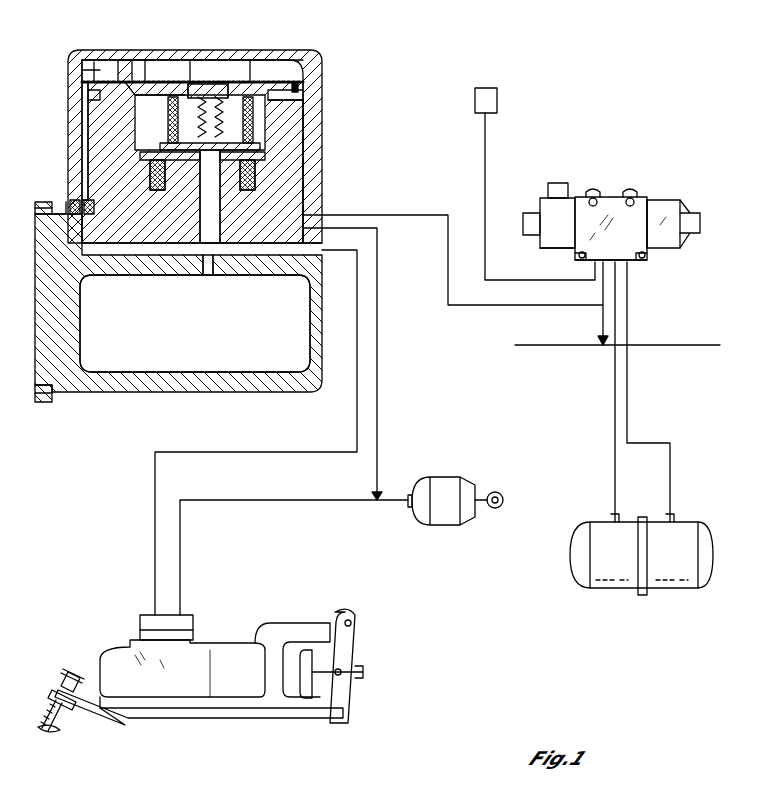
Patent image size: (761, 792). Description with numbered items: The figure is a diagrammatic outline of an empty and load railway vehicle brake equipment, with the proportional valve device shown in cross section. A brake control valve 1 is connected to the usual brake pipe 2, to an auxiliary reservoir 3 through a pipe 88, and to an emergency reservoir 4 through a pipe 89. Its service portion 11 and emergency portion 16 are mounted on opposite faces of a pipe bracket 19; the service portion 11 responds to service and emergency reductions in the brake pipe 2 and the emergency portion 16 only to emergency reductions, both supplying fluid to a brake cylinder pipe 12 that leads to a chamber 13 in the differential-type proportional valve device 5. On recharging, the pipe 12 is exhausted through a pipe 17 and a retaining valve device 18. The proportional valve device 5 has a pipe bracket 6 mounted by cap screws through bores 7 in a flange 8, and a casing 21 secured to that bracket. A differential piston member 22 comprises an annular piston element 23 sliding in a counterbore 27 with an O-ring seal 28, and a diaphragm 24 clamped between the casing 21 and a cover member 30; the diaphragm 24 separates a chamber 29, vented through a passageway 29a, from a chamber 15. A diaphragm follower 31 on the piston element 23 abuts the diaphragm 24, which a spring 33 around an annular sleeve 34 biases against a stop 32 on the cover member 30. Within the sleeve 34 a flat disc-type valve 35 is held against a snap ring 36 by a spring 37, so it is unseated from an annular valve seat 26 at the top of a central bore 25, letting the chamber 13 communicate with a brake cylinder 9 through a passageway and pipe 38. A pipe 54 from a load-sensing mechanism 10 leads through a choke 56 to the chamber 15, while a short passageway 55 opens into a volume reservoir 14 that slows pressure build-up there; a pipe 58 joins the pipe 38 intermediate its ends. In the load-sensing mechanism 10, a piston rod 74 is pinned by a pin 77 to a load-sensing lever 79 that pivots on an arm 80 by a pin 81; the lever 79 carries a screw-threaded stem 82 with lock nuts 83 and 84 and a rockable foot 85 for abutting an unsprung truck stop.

The brake control valve 1 is at (615, 190).
The brake pipe 2 is at (594, 333).
The auxiliary reservoir 3 is at (706, 525).
The emergency reservoir 4 is at (575, 526).
The differential-type proportional valve device 5 is at (331, 133).
The pipe bracket 6 is at (30, 265).
The bores 7 is at (35, 210).
The flange 8 is at (48, 202).
The brake cylinder 9 is at (442, 473).
The load-sensing mechanism 10 is at (135, 640).
The service portion 11 is at (540, 254).
The brake cylinder pipe 12 is at (322, 202).
The chamber 13 is at (222, 170).
The volume reservoir 14 is at (203, 336).
The chamber 15 is at (252, 80).
The emergency portion 16 is at (668, 248).
The pipe 17 is at (485, 151).
The retaining valve device 18 is at (492, 100).
The pipe bracket 19 is at (582, 267).
The casing 21 is at (314, 186).
The differential piston member 22 is at (300, 96).
The annular piston element 23 is at (256, 120).
The diaphragm 24 is at (279, 84).
The central bore 25 is at (256, 183).
The annular valve seat 26 is at (256, 156).
The counterbore 27 is at (156, 160).
The O-ring seal 28 is at (160, 147).
The chamber 29 is at (86, 96).
The passageway 29a is at (306, 104).
The cover member 30 is at (140, 58).
The diaphragm follower 31 is at (148, 80).
The stop 32 is at (215, 62).
The spring 33 is at (166, 182).
The annular sleeve 34 is at (166, 112).
The flat disc-type valve 35 is at (166, 128).
The snap ring 36 is at (232, 138).
The spring 37 is at (190, 86).
The passageway 38 is at (355, 232).
The pipe 54 is at (80, 72).
The short passageway 55 is at (210, 275).
The choke 56 is at (70, 212).
The pipe 58 is at (182, 506).
The piston rod 74 is at (318, 680).
The pin 77 is at (363, 672).
The load-sensing lever 79 is at (285, 718).
The arm 80 is at (305, 630).
The pin 81 is at (353, 623).
The screw-threaded stem 82 is at (74, 672).
The lock nut 83 is at (60, 682).
The lock nut 84 is at (50, 694).
The foot 85 is at (40, 726).
The pipe 88 is at (670, 480).
The pipe 89 is at (615, 480).